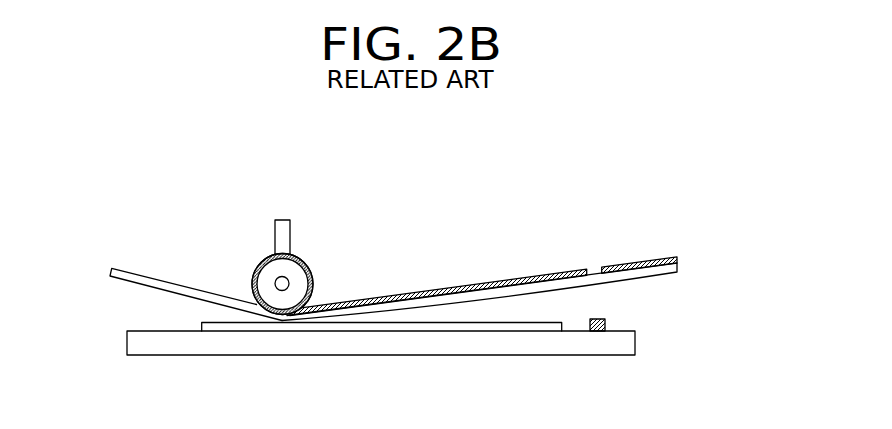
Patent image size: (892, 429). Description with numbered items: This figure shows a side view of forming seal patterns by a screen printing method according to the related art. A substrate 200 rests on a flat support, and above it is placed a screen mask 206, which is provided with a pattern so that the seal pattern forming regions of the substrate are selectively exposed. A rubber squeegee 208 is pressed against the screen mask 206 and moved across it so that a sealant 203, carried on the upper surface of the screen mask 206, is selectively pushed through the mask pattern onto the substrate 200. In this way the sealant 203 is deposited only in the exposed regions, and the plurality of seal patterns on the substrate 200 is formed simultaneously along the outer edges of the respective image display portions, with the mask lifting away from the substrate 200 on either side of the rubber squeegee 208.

The substrate 200 is at (623, 345).
The screen mask 206 is at (678, 264).
The sealant 203 is at (643, 261).
The rubber squeegee 208 is at (295, 274).